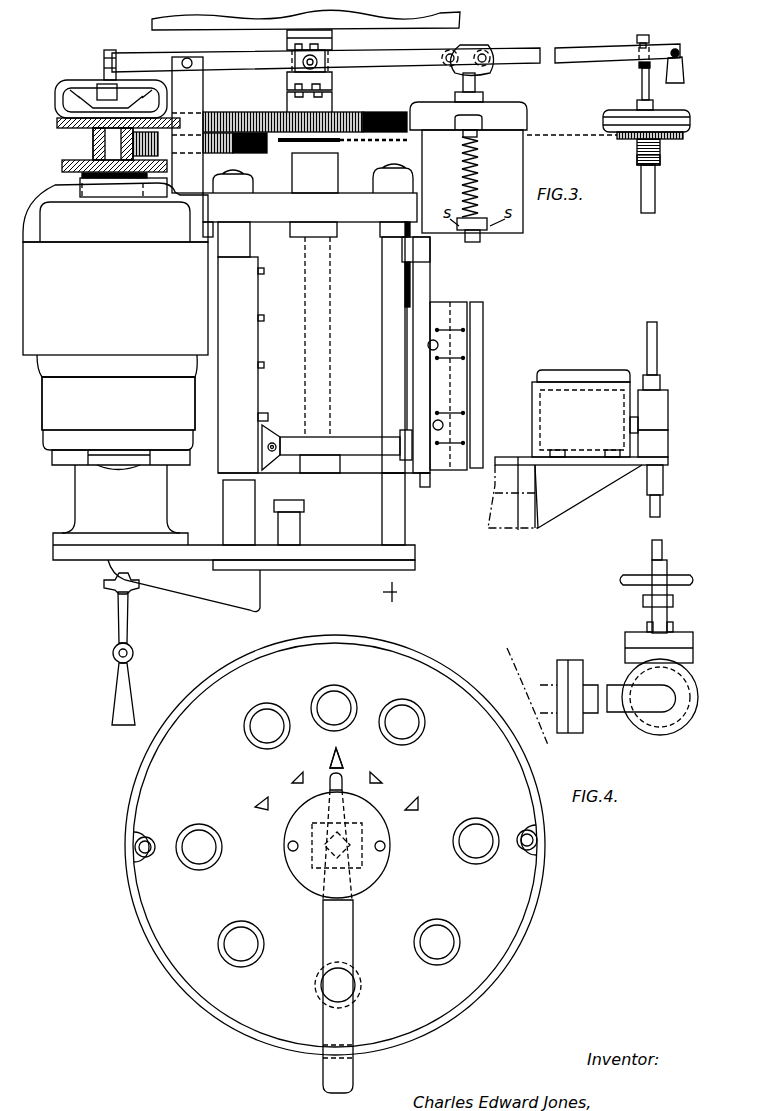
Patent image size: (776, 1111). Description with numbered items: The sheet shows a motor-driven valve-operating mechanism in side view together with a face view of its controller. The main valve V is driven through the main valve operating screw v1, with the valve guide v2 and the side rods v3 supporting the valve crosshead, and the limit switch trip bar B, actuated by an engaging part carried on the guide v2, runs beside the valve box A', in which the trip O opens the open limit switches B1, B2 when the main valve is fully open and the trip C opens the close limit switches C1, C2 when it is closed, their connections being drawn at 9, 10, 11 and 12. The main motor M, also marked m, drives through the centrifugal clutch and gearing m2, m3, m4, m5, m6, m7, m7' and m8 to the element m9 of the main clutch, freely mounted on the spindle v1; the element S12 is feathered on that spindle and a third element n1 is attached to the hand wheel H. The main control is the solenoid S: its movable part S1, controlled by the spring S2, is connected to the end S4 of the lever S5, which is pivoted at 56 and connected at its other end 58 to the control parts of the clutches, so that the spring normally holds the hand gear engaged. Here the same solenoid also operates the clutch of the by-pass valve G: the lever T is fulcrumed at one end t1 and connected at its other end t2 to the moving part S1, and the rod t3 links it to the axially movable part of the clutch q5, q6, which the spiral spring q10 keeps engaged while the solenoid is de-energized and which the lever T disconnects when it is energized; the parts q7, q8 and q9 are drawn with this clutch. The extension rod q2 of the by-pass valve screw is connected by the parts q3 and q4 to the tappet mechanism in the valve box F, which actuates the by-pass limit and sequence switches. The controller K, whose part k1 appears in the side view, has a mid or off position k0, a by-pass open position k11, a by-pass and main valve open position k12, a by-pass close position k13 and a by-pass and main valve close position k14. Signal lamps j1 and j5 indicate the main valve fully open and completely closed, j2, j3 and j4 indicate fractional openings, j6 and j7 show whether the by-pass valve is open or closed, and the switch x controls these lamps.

In FIG. 3, the lever end 58 is at (103, 78).
In FIG. 3, the centrifugal clutch part m4 is at (60, 84).
In FIG. 3, the centrifugal clutch part m3 is at (57, 124).
In FIG. 3, the centrifugal clutch gearing part m6 is at (93, 147).
In FIG. 3, the centrifugal clutch gearing part m5 is at (62, 165).
In FIG. 3, the centrifugal clutch part m2 is at (80, 177).
In FIG. 3, the lever pivot 56 is at (191, 60).
In FIG. 3, the hand wheel H is at (262, 29).
In FIG. 3, the third clutch element n1 is at (332, 40).
In FIG. 3, the main clutch element S12 is at (333, 80).
In FIG. 3, the main clutch element m9 is at (333, 103).
In FIG. 3, the centrifugal clutch gearing part m8 is at (408, 112).
In FIG. 3, the clutch gearing element m7' is at (283, 110).
In FIG. 3, the centrifugal clutch gearing part m7 is at (239, 152).
In FIG. 3, the rod q9 is at (338, 143).
In FIG. 3, the control lever S5 is at (407, 51).
In FIG. 3, the lever end S4 is at (451, 51).
In FIG. 3, the lever end t2 is at (487, 52).
In FIG. 3, the lever T is at (592, 49).
In FIG. 3, the fulcrum t1 is at (672, 49).
In FIG. 3, the rod t3 is at (641, 88).
In FIG. 3, the by-pass clutch part q5 is at (664, 114).
In FIG. 3, the solenoid movable part S1 is at (518, 119).
In FIG. 3, the main solenoid S is at (472, 186).
In FIG. 3, the spring S2 is at (461, 166).
In FIG. 3, the rod q8 is at (570, 137).
In FIG. 3, the nut q7 is at (620, 140).
In FIG. 3, the by-pass clutch part q6 is at (662, 148).
In FIG. 3, the spiral spring q10 is at (655, 160).
In FIG. 3, the extension rod q2 is at (652, 200).
In FIG. 3, the main motor M is at (115, 358).
In FIG. 3, the motor casing m is at (117, 389).
In FIG. 3, the side rods v3 is at (250, 250).
In FIG. 3, the main valve operating screw v1 is at (323, 347).
In FIG. 3, the valve guide v2 is at (288, 447).
In FIG. 3, the limit switch trip bar B is at (421, 263).
In FIG. 3, the valve box A' is at (456, 374).
In FIG. 3, the open trip O is at (429, 343).
In FIG. 3, the close trip C is at (434, 423).
In FIG. 3, the main valve open limit switch B1 is at (450, 321).
In FIG. 3, the main valve open limit switch B2 is at (450, 372).
In FIG. 3, the main valve close limit switch C1 is at (450, 403).
In FIG. 3, the main valve close limit switch C2 is at (450, 458).
In FIG. 3, the terminal 9 is at (463, 330).
In FIG. 3, the terminal 10 is at (463, 358).
In FIG. 3, the terminal 11 is at (463, 413).
In FIG. 3, the terminal 12 is at (463, 443).
In FIG. 3, the by-pass valve box F is at (558, 386).
In FIG. 3, the connecting part q4 is at (650, 418).
In FIG. 3, the connecting part q3 is at (663, 444).
In FIG. 3, the main valve V is at (397, 593).
In FIG. 3, the lever head k1 is at (130, 587).
In FIG. 3, the controller K is at (128, 635).
In FIG. 4, the controller K is at (342, 932).
In FIG. 3, the by-pass valve G is at (683, 690).
In FIG. 4, the signal lamp j1 is at (205, 850).
In FIG. 4, the signal lamp j2 is at (250, 947).
In FIG. 4, the signal lamp j3 is at (358, 985).
In FIG. 4, the signal lamp j4 is at (450, 940).
In FIG. 4, the signal lamp j5 is at (486, 836).
In FIG. 4, the signal lamp j6 is at (262, 730).
In FIG. 4, the signal lamp j7 is at (410, 727).
In FIG. 4, the switch x is at (342, 710).
In FIG. 4, the mid or off position k0 is at (344, 764).
In FIG. 4, the by-pass open position k11 is at (311, 762).
In FIG. 4, the by-pass and main valve open position k12 is at (275, 789).
In FIG. 4, the by-pass close position k13 is at (394, 776).
In FIG. 4, the by-pass and main valve close position k14 is at (427, 807).